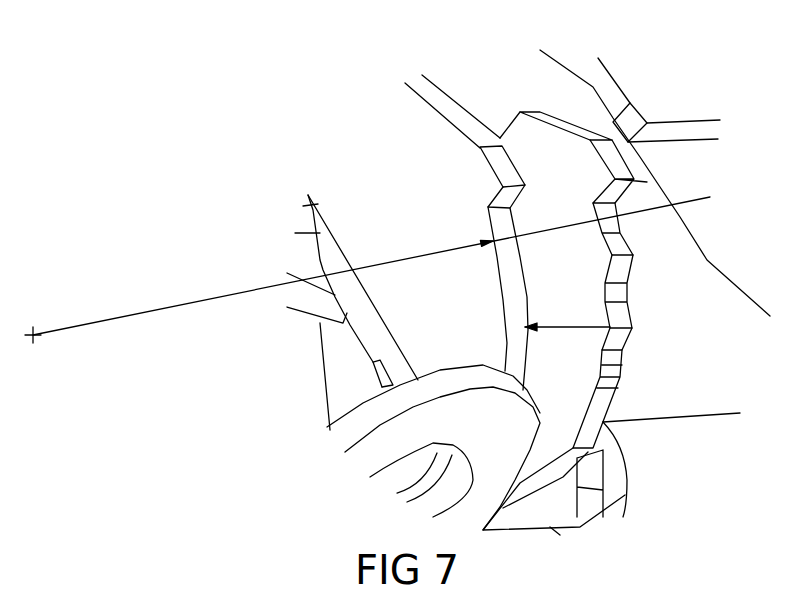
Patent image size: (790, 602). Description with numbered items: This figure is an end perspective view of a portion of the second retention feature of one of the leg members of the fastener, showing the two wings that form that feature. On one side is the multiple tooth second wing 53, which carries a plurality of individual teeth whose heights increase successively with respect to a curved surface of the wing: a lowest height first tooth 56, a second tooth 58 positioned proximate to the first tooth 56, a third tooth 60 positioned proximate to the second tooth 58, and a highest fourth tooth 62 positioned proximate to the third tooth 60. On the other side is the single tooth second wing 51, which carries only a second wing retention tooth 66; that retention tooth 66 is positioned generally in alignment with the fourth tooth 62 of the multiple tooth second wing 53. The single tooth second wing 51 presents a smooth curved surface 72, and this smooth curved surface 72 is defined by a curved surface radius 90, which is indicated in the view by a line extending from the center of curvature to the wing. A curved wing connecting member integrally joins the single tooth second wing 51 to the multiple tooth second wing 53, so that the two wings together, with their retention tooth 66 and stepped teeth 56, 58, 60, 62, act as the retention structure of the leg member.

The single tooth second wing 51 is at (433, 135).
The multiple tooth second wing 53 is at (563, 147).
The second wing retention tooth 66 is at (486, 190).
The curved surface radius 90 is at (381, 265).
The fourth tooth 62 is at (643, 179).
The third tooth 60 is at (637, 255).
The second tooth 58 is at (633, 328).
The smooth curved surface 72 is at (622, 347).
The first tooth 56 is at (620, 377).